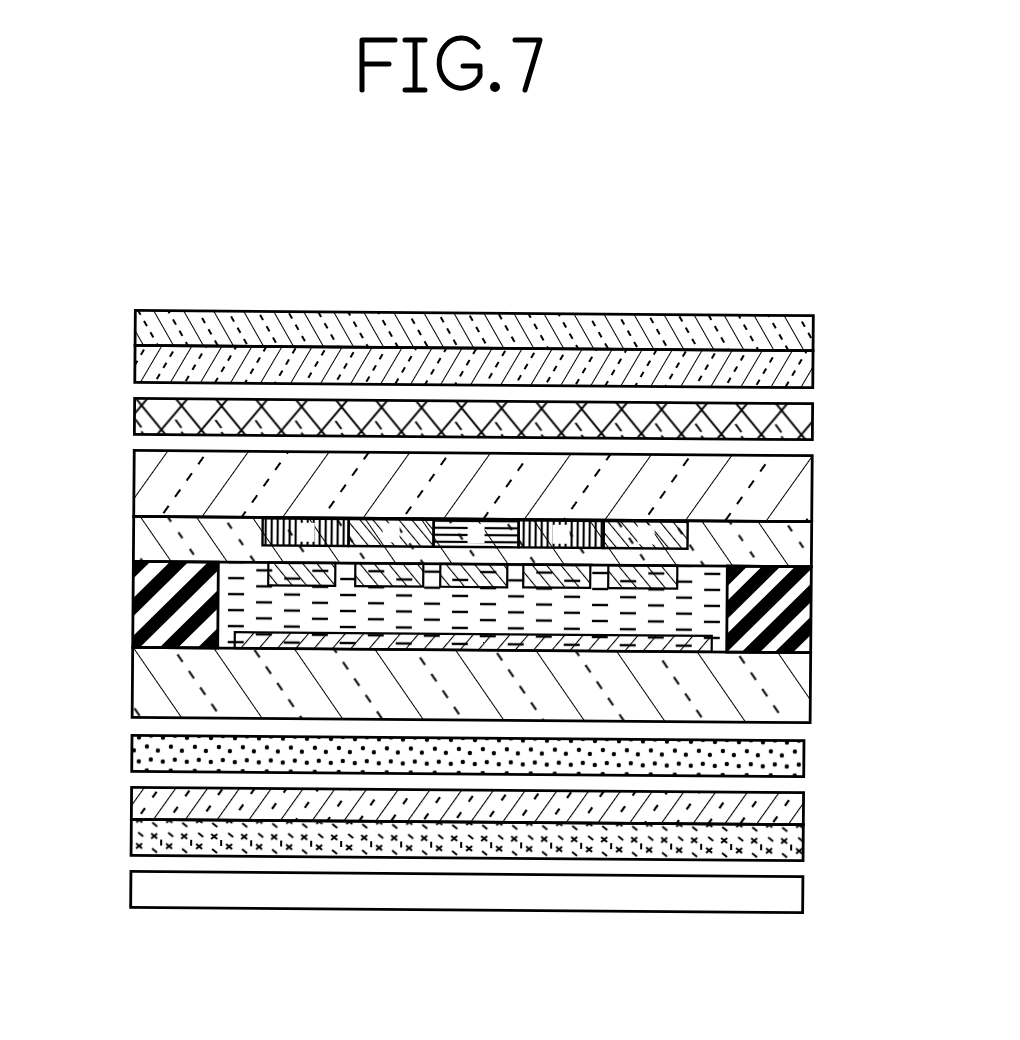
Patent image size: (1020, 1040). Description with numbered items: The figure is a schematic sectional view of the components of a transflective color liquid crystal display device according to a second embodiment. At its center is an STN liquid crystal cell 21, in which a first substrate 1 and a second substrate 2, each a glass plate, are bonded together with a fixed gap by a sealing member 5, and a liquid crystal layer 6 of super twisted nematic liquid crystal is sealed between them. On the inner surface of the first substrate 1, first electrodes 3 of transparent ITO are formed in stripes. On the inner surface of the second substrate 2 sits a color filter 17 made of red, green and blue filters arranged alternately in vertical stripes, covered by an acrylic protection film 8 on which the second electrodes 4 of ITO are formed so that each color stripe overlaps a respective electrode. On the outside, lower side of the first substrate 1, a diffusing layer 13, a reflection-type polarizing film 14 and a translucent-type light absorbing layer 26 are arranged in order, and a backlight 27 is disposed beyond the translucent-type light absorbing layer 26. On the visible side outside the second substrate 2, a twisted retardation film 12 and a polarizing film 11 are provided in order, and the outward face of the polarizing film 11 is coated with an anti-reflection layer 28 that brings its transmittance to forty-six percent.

The first substrate 1 is at (140, 687).
The second substrate 2 is at (135, 487).
The first electrodes 3 is at (575, 640).
The second electrodes 4 is at (628, 572).
The sealing member 5 is at (150, 613).
The liquid crystal layer 6 is at (440, 612).
The protection film 8 is at (135, 547).
The polarizing film 11 is at (810, 366).
The twisted retardation film 12 is at (810, 422).
The diffusing layer 13 is at (806, 759).
The reflection-type polarizing film 14 is at (806, 810).
The color filter 17 is at (505, 545).
The STN liquid crystal cell 21 is at (832, 460).
The translucent-type light absorbing layer 26 is at (806, 846).
The backlight 27 is at (806, 904).
The anti-reflection layer 28 is at (812, 328).